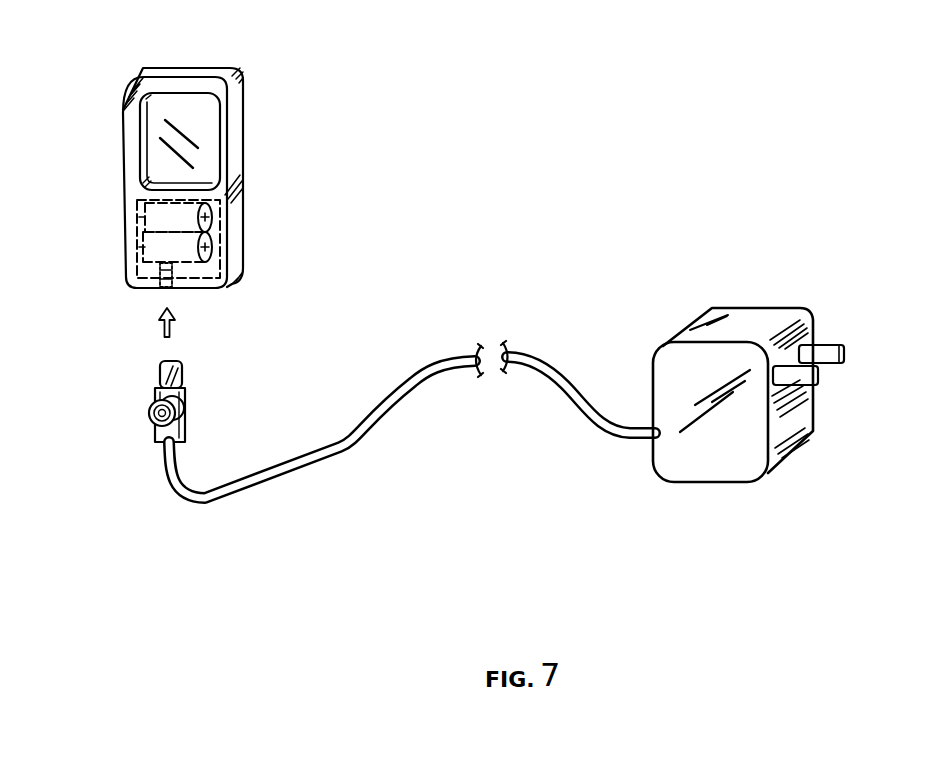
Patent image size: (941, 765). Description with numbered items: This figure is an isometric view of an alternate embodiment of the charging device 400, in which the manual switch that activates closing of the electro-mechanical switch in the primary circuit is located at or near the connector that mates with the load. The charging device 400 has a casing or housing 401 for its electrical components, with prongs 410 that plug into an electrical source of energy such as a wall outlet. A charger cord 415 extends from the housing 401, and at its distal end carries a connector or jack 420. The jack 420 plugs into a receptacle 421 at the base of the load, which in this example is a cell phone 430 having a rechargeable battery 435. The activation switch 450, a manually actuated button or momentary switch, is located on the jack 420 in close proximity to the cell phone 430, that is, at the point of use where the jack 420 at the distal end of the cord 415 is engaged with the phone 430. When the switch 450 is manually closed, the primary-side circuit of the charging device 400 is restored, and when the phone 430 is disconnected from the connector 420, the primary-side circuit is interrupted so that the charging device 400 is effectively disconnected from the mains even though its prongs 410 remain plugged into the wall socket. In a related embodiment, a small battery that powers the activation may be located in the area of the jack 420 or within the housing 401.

The charging device 400 is at (746, 280).
The housing 401 is at (730, 483).
The prongs 410 is at (843, 358).
The charger cord 415 is at (413, 377).
The jack 420 is at (177, 398).
The receptacle 421 is at (168, 289).
The cell phone 430 is at (247, 192).
The rechargeable battery 435 is at (220, 241).
The activation switch 450 is at (150, 413).